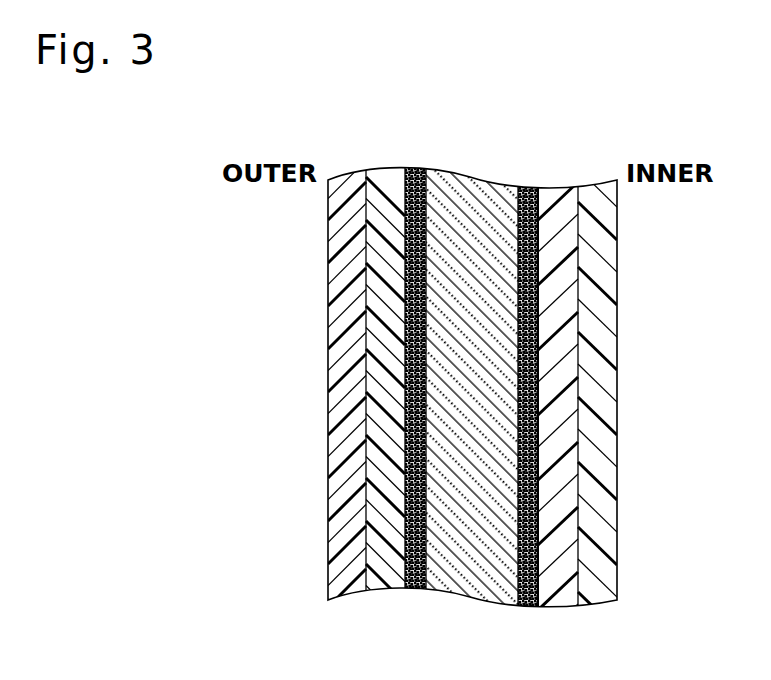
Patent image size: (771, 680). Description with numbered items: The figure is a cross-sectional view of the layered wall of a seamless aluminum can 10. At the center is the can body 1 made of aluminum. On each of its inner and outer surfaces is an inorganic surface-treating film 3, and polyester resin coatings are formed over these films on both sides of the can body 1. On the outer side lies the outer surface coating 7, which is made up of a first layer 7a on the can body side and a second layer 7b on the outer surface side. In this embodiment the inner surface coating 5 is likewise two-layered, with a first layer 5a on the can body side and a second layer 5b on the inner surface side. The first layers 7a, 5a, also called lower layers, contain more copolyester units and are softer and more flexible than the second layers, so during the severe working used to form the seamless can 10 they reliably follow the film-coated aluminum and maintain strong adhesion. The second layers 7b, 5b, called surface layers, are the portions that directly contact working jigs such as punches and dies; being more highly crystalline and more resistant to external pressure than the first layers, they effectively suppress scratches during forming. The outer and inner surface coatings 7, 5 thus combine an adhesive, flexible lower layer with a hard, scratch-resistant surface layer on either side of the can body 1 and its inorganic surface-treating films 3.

The can body 1 is at (467, 179).
The inorganic surface-treating film 3 is at (416, 600).
The inner surface coating 5 is at (678, 287).
The first layer 5a is at (565, 302).
The second layer 5b is at (612, 339).
The outer surface coating 7 is at (262, 332).
The first layer 7a is at (373, 386).
The second layer 7b is at (335, 334).
The seamless can 10 is at (682, 428).